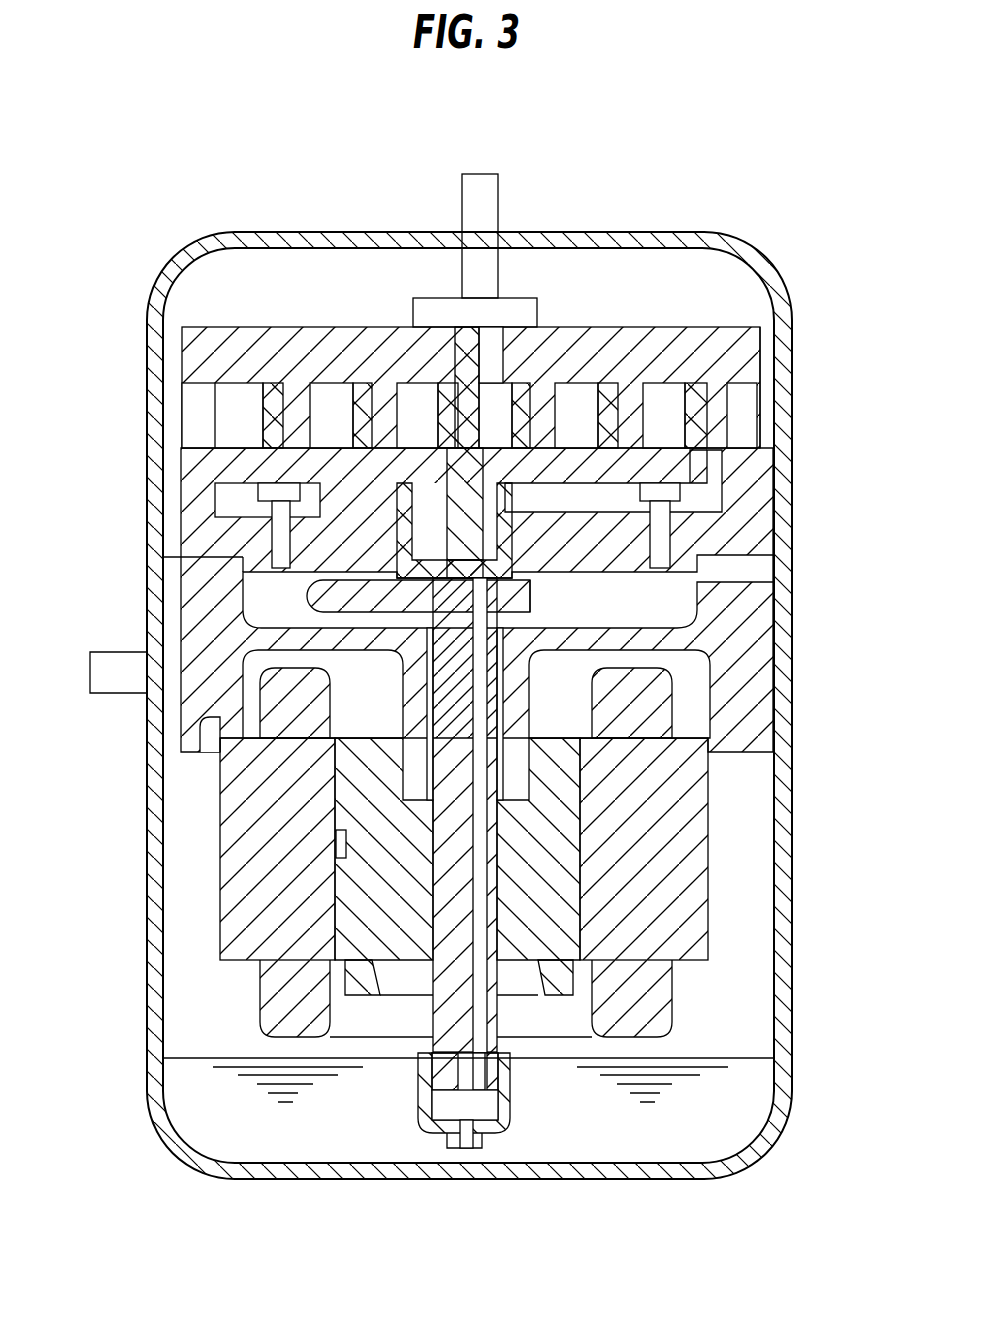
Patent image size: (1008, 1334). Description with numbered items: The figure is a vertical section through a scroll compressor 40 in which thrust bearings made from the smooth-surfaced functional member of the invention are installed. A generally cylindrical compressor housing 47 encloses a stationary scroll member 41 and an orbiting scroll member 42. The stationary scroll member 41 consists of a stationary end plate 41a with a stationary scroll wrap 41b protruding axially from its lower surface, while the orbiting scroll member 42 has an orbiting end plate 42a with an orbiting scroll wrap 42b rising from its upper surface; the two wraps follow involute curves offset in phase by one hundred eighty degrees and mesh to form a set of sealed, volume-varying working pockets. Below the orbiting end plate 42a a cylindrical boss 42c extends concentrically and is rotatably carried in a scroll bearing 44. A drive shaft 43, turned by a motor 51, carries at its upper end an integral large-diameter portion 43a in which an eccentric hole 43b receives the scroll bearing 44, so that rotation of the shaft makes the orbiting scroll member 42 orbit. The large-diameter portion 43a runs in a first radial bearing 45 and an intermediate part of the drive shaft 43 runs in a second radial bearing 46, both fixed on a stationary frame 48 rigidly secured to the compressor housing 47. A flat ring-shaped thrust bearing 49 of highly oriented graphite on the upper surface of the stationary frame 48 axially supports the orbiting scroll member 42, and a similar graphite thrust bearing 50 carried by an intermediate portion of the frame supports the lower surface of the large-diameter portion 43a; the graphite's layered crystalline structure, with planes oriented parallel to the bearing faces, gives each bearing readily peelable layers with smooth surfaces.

The scroll compressor 40 is at (387, 176).
The stationary scroll member 41 is at (531, 359).
The stationary end plate 41a is at (747, 368).
The stationary scroll wrap 41b is at (707, 433).
The orbiting scroll member 42 is at (470, 518).
The orbiting end plate 42a is at (703, 503).
The orbiting scroll wrap 42b is at (755, 330).
The cylindrical boss 42c is at (310, 602).
The drive shaft 43 is at (436, 1001).
The large-diameter portion 43a is at (430, 497).
The eccentric hole 43b is at (498, 567).
The scroll bearing 44 is at (498, 503).
The first radial bearing 45 is at (300, 528).
The second radial bearing 46 is at (427, 773).
The compressor housing 47 is at (148, 962).
The stationary frame 48 is at (205, 595).
The thrust bearing 49 is at (703, 470).
The thrust bearing 50 is at (535, 622).
The motor 51 is at (734, 979).